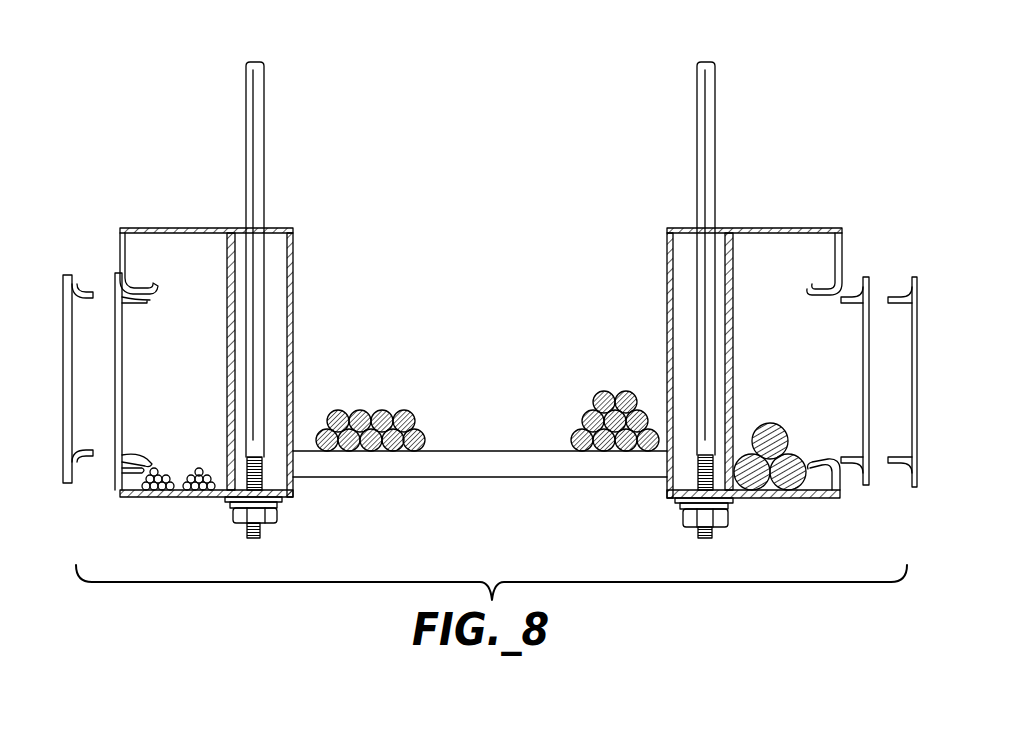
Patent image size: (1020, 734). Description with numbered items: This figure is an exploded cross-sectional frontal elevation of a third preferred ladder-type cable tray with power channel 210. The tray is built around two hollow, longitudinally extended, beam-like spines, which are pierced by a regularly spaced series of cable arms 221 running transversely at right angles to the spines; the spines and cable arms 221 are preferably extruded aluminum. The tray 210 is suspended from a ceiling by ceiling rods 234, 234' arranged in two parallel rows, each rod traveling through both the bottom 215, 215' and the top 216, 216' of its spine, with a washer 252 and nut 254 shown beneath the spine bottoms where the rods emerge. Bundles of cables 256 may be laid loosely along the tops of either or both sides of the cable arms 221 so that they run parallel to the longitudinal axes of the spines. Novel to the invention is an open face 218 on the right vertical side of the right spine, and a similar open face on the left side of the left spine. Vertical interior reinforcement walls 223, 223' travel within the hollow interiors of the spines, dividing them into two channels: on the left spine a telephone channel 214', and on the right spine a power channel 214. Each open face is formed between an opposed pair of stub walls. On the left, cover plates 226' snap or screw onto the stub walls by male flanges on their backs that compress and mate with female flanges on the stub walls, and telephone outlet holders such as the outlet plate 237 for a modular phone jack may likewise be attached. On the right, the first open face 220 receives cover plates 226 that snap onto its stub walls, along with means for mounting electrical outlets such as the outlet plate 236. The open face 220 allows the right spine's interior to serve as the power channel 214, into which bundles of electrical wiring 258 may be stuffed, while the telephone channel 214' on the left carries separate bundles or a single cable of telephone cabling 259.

The ladder-type cable tray with power channel 210 is at (571, 118).
The power channel 214 is at (811, 224).
The telephone channel 214' is at (162, 235).
The bottom of spine 215 is at (753, 512).
The bottom of spine 215' is at (206, 515).
The top of spine 216 is at (754, 188).
The top of spine 216' is at (253, 327).
The open face 218 is at (842, 253).
The first open face 220 is at (667, 367).
The cable arm 221 is at (492, 460).
The vertical interior reinforcement wall 223 is at (765, 361).
The vertical interior reinforcement wall 223' is at (190, 361).
The cover plate 226 is at (819, 381).
The cover plate 226' is at (103, 405).
The ceiling rod 234 is at (749, 276).
The ceiling rod 234' is at (220, 300).
The outlet plate 236 is at (907, 478).
The outlet plate 237 is at (62, 290).
The washer 252 is at (675, 503).
The nut 254 is at (712, 532).
The bundles of cables 256 is at (380, 410).
The bundles of electrical wiring 258 is at (770, 423).
The telephone cabling 259 is at (202, 468).